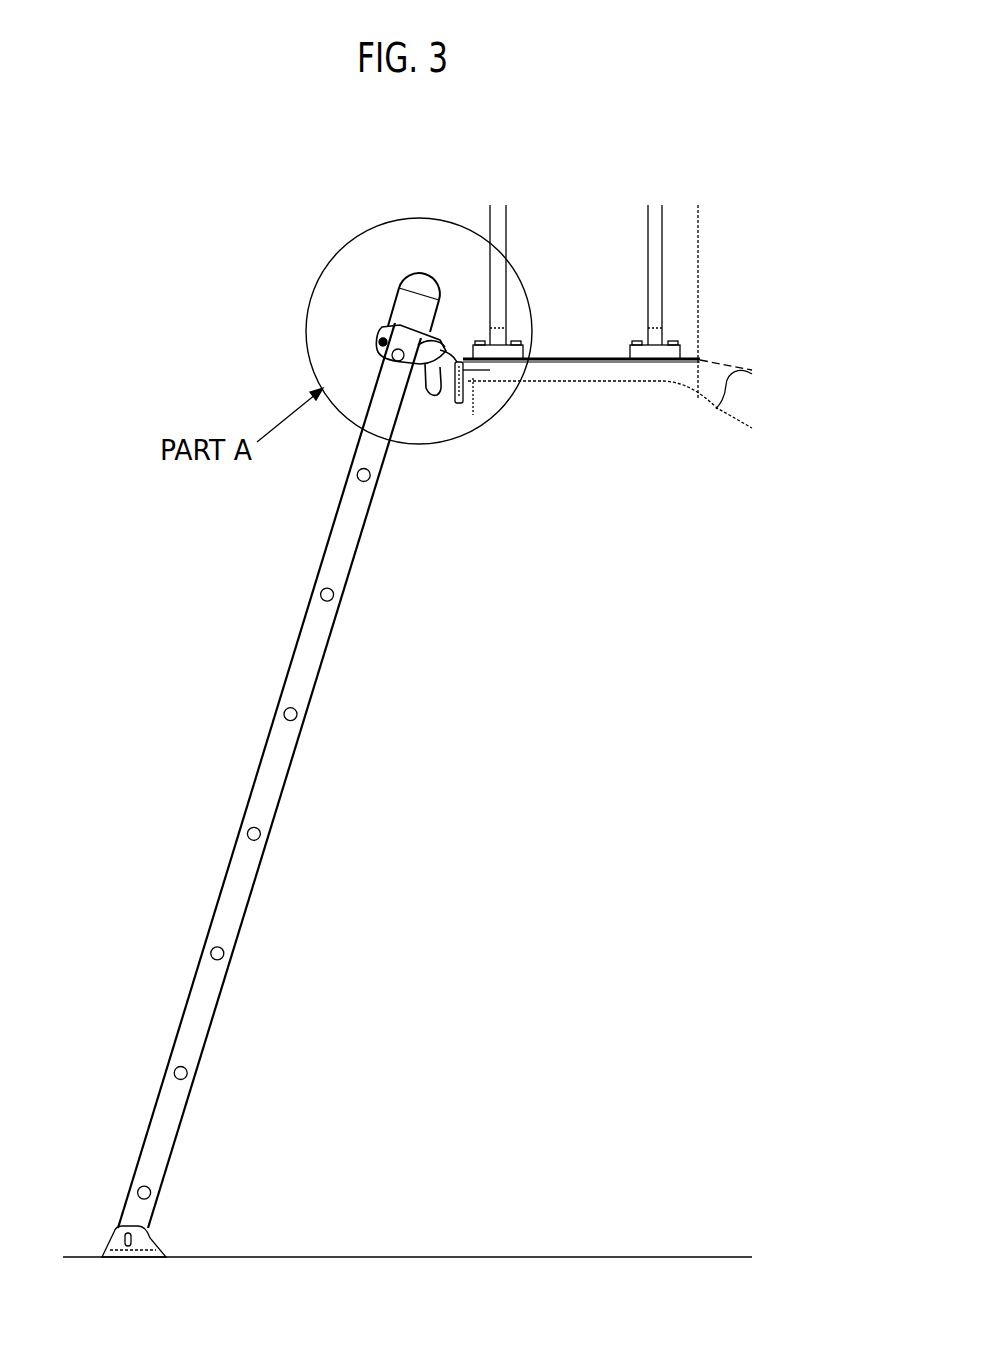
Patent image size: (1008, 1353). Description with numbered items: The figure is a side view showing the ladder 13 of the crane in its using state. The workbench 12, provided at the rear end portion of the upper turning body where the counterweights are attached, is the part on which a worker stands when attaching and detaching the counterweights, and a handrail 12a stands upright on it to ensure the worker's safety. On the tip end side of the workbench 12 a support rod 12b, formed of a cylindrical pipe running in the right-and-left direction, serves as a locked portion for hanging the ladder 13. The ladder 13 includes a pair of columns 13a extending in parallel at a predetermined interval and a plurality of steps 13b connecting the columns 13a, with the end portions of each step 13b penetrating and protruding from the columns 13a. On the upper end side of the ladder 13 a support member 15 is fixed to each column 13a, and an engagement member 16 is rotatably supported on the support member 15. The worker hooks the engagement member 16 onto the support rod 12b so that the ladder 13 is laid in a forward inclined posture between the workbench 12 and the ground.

The workbench 12 is at (587, 373).
The handrail 12a is at (500, 280).
The support rod 12b is at (452, 372).
The ladder 13 is at (286, 661).
The column 13a is at (237, 903).
The step 13b is at (253, 827).
The support member 15 is at (402, 330).
The engagement member 16 is at (437, 342).